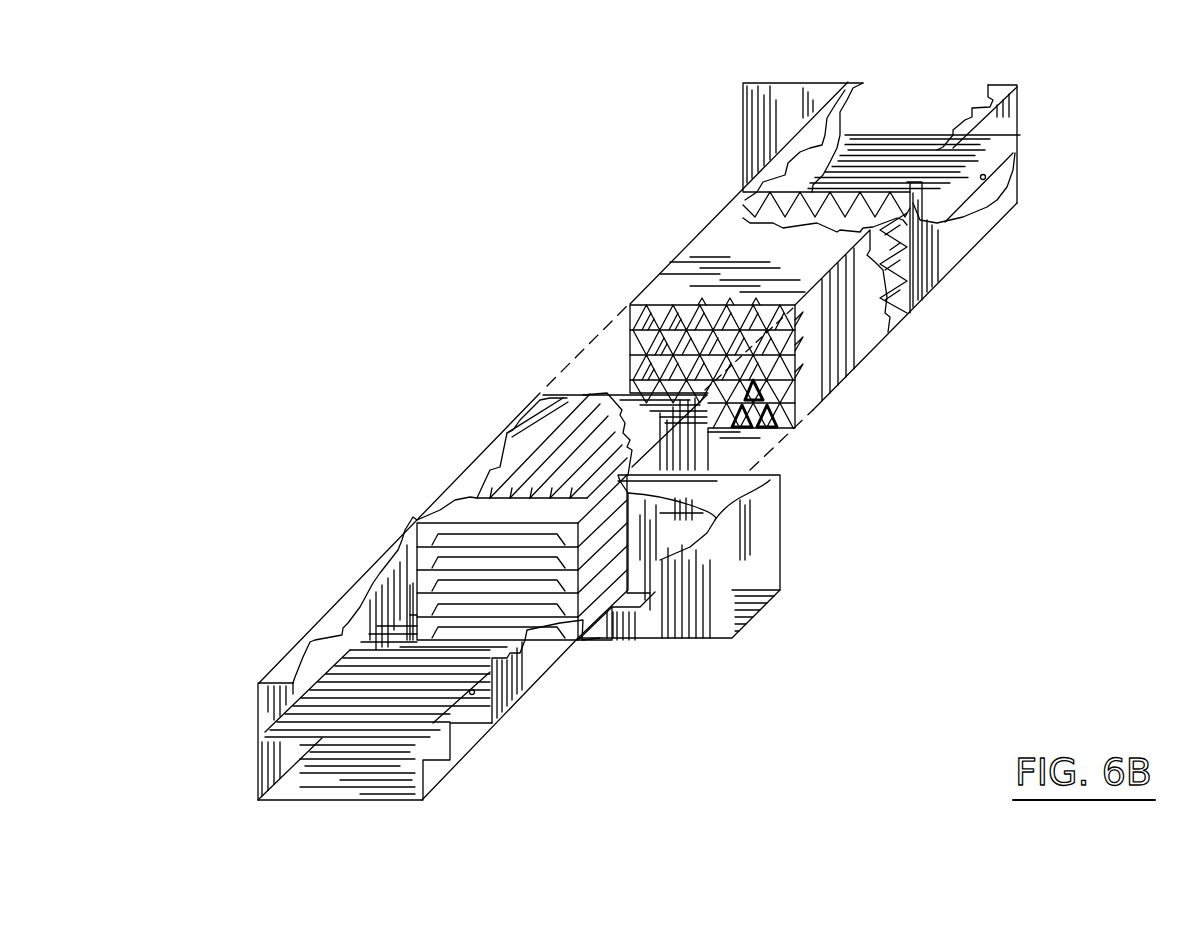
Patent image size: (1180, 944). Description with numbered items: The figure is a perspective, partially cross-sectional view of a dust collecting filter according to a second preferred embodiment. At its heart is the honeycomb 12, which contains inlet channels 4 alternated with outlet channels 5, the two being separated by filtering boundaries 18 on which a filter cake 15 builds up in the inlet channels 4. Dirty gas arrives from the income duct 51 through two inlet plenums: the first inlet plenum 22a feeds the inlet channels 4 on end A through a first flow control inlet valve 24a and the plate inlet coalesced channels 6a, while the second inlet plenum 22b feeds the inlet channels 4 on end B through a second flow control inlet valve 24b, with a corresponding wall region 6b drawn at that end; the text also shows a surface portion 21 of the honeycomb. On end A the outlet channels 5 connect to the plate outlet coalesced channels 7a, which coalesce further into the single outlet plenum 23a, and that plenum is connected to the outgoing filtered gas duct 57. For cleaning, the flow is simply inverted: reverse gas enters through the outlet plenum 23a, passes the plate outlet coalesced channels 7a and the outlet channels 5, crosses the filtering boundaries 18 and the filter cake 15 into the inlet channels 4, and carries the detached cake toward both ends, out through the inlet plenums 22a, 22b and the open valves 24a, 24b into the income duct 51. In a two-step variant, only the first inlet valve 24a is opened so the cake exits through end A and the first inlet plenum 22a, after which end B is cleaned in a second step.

The inlet channels 4 is at (630, 336).
The outlet channels 5 is at (687, 307).
The honeycomb 12 is at (584, 458).
The filter cake 15 is at (737, 427).
The filtering boundaries 18 is at (735, 400).
The honeycomb upper surface 21 is at (780, 262).
The income duct 51 is at (330, 780).
The outgoing filtered gas duct 57 is at (740, 573).
The plate inlet coalesced channels 6a is at (517, 562).
The side wall at end B 6b is at (834, 140).
The plate outlet coalesced channels 7a is at (470, 508).
The first inlet plenum 22a is at (362, 573).
The second inlet plenum 22b is at (888, 118).
The outlet plenum 23a is at (748, 485).
The first flow control inlet valve 24a is at (398, 715).
The second flow control inlet valve 24b is at (860, 130).